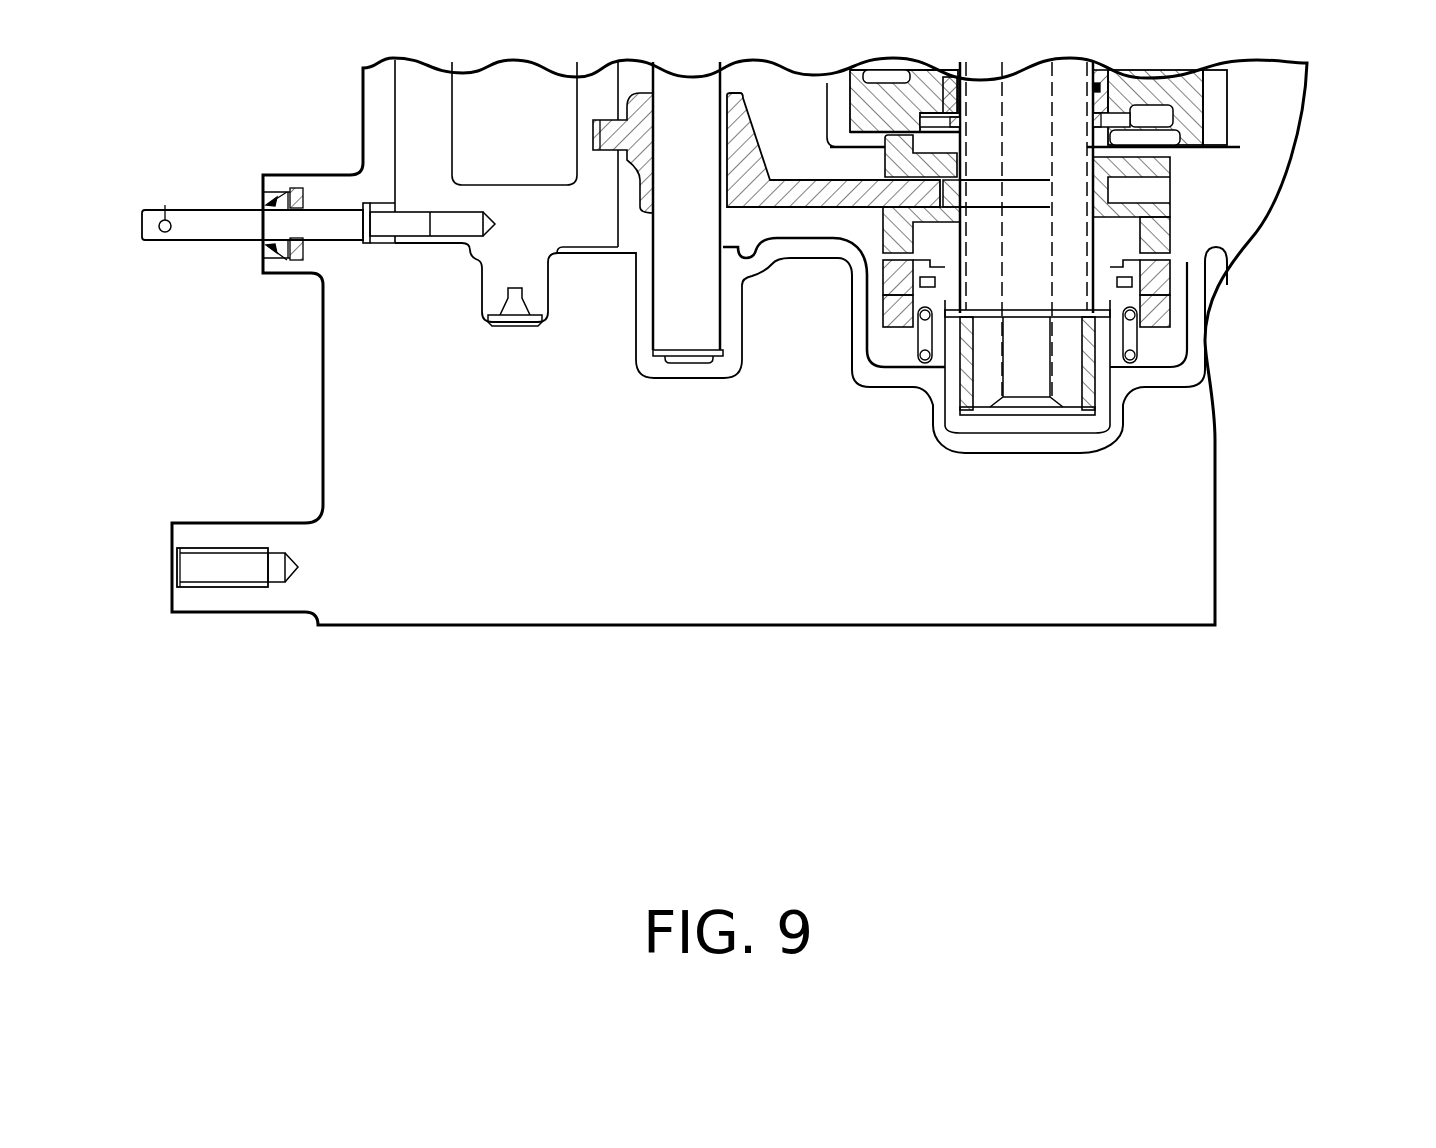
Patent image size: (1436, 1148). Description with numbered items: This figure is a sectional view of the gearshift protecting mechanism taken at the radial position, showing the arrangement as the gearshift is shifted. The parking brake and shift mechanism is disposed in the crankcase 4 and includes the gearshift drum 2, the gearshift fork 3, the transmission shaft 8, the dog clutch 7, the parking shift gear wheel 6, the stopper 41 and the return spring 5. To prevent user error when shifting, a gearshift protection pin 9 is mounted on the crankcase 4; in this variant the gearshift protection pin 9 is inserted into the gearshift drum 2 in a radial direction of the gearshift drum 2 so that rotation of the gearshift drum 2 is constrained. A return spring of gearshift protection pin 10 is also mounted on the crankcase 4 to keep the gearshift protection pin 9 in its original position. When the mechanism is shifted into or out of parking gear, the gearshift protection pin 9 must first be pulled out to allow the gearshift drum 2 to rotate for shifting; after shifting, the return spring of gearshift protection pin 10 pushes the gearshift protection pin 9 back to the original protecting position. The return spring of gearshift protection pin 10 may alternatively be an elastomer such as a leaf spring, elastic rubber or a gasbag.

The gearshift drum 2 is at (577, 213).
The gearshift fork 3 is at (823, 197).
The crankcase 4 is at (940, 393).
The stopper 41 is at (1168, 347).
The return spring 5 is at (1132, 330).
The parking shift gear wheel 6 is at (1155, 281).
The dog clutch 7 is at (1147, 224).
The transmission shaft 8 is at (1040, 143).
The gearshift protection pin 9 is at (190, 230).
The return spring of gearshift protection pin 10 is at (345, 243).